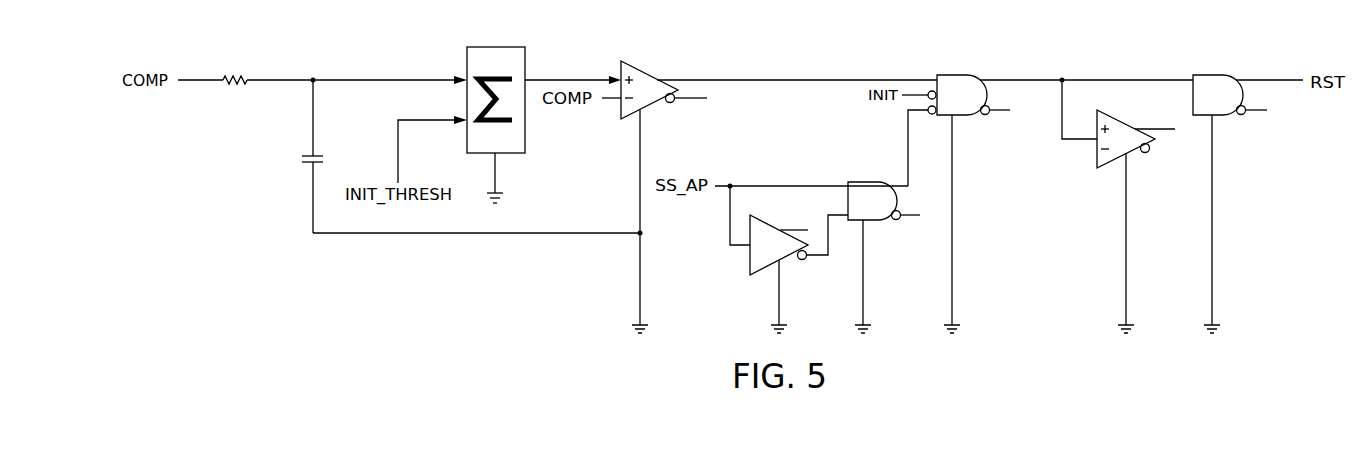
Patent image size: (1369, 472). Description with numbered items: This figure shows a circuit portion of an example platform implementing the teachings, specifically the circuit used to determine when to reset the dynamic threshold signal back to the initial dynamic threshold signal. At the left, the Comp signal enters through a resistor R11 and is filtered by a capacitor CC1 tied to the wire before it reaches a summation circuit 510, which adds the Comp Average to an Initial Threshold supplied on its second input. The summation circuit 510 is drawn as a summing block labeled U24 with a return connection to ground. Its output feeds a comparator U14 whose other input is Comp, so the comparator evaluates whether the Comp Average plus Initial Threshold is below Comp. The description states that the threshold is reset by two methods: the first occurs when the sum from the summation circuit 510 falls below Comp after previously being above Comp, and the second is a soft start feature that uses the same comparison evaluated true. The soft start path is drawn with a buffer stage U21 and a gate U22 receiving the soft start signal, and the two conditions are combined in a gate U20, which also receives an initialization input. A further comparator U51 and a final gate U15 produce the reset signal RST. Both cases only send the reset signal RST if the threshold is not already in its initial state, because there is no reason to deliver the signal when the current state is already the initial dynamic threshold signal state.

The summation circuit 510 is at (464, 114).
The summing amplifier U24 is at (496, 114).
The comparator U14 is at (649, 84).
The NAND gate U20 is at (959, 84).
The NAND gate U15 is at (1219, 84).
The comparator U51 is at (1126, 132).
The comparator U21 is at (779, 239).
The NAND gate U22 is at (874, 190).
The resistor R11 is at (234, 82).
The capacitor CC1 is at (275, 158).